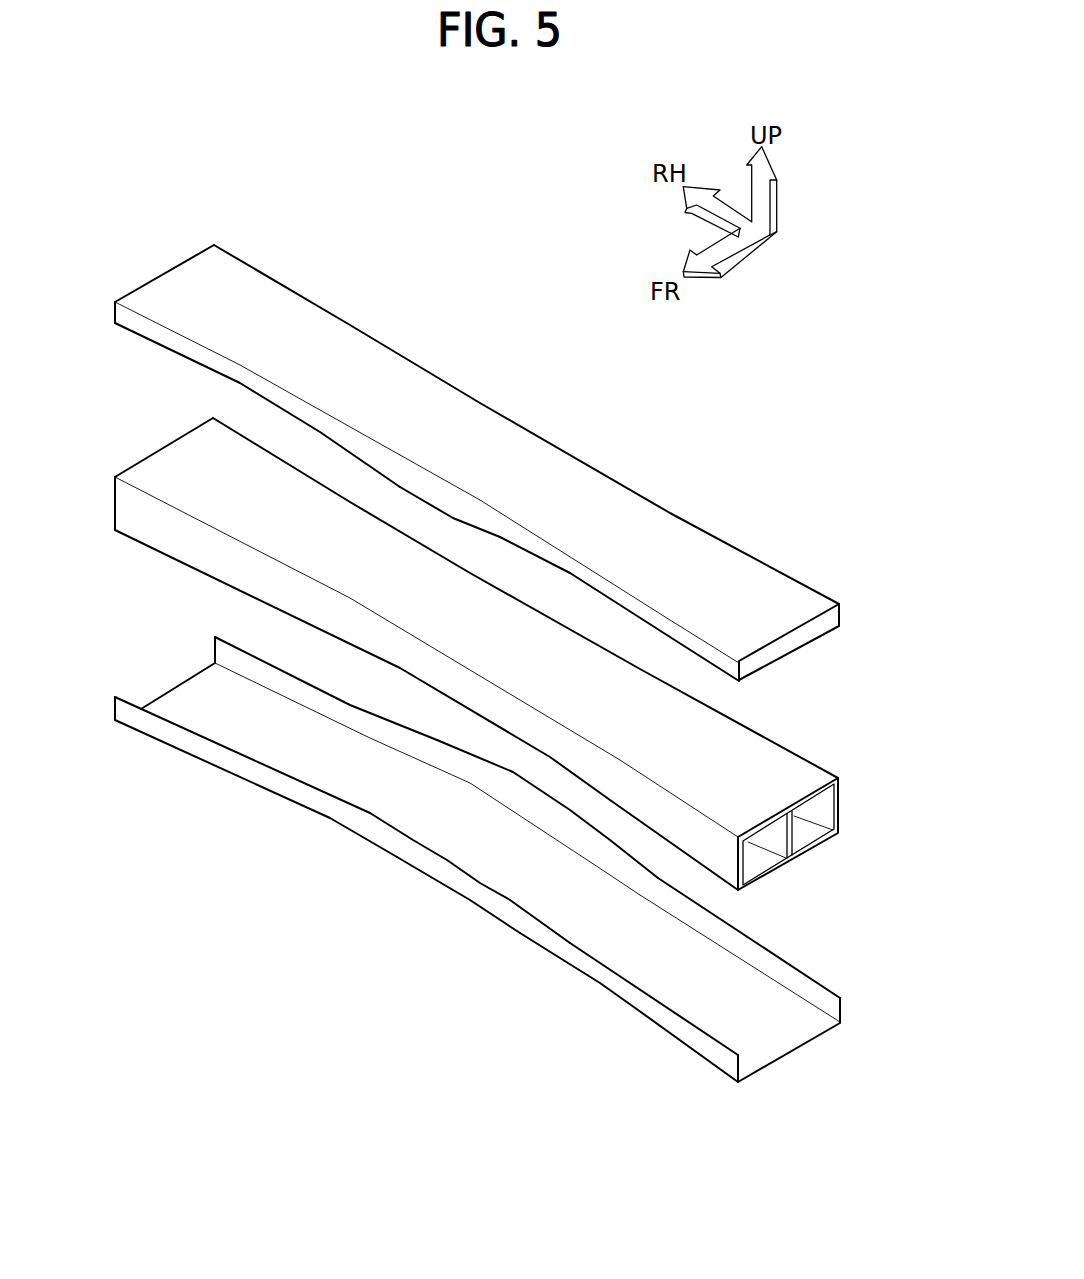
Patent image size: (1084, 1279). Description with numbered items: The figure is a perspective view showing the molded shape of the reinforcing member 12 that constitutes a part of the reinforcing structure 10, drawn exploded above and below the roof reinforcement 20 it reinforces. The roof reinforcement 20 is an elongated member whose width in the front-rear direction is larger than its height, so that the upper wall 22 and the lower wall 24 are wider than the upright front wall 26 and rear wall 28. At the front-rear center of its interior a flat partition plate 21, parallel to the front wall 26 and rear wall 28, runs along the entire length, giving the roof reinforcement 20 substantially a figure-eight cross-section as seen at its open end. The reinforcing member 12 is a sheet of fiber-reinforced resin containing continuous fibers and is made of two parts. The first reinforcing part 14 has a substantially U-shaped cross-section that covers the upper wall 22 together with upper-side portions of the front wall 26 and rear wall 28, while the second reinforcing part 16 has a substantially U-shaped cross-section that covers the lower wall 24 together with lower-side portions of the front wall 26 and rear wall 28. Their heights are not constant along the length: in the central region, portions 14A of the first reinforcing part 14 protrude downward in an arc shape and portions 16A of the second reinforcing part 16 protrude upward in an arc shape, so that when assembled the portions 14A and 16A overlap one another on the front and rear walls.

The reinforcing structure 10 is at (720, 492).
The reinforcing member 12 is at (567, 453).
The first reinforcing part 14 is at (418, 402).
The portions of the first reinforcing part 14A is at (437, 497).
The second reinforcing part 16 is at (617, 988).
The portions of the second reinforcing part 16A is at (520, 792).
The roof reinforcement 20 is at (780, 737).
The partition plate 21 is at (792, 835).
The upper wall 22 is at (178, 462).
The lower wall 24 is at (760, 865).
The front wall 26 is at (160, 535).
The rear wall 28 is at (825, 805).